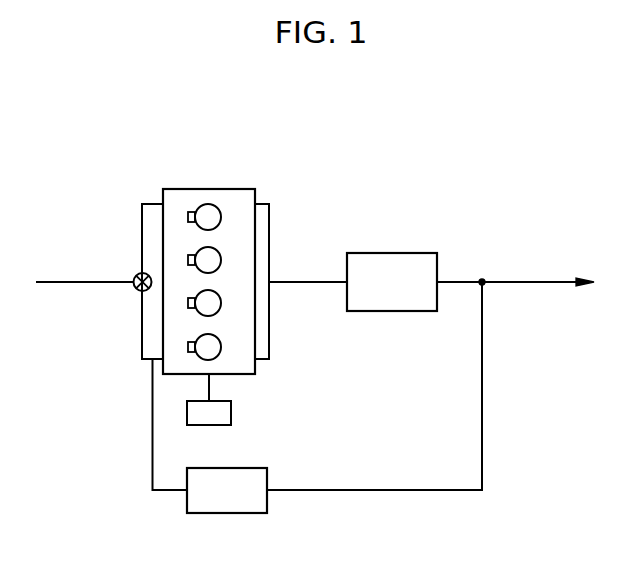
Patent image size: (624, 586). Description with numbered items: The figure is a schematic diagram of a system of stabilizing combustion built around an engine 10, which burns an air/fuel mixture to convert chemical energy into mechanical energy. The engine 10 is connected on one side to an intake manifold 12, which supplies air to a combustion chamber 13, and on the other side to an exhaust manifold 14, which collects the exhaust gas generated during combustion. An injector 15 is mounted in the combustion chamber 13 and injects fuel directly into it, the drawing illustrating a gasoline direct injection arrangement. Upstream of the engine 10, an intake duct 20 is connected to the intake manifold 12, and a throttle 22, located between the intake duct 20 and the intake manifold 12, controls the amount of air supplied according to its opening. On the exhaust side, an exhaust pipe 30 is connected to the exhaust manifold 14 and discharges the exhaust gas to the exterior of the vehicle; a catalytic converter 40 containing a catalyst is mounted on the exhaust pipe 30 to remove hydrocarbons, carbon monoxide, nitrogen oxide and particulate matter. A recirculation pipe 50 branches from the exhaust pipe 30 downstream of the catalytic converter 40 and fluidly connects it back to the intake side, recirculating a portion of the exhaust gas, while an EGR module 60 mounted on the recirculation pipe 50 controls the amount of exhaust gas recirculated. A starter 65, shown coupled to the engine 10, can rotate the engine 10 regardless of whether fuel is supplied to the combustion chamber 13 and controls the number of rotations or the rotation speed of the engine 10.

The engine 10 is at (208, 188).
The intake manifold 12 is at (153, 204).
The combustion chamber 13 is at (219, 208).
The exhaust manifold 14 is at (262, 204).
The injector 15 is at (189, 211).
The intake duct 20 is at (69, 281).
The throttle 22 is at (134, 290).
The exhaust pipe 30 is at (308, 281).
The catalytic converter 40 is at (391, 253).
The recirculation pipe 50 is at (376, 493).
The EGR module 60 is at (228, 514).
The starter 65 is at (232, 413).